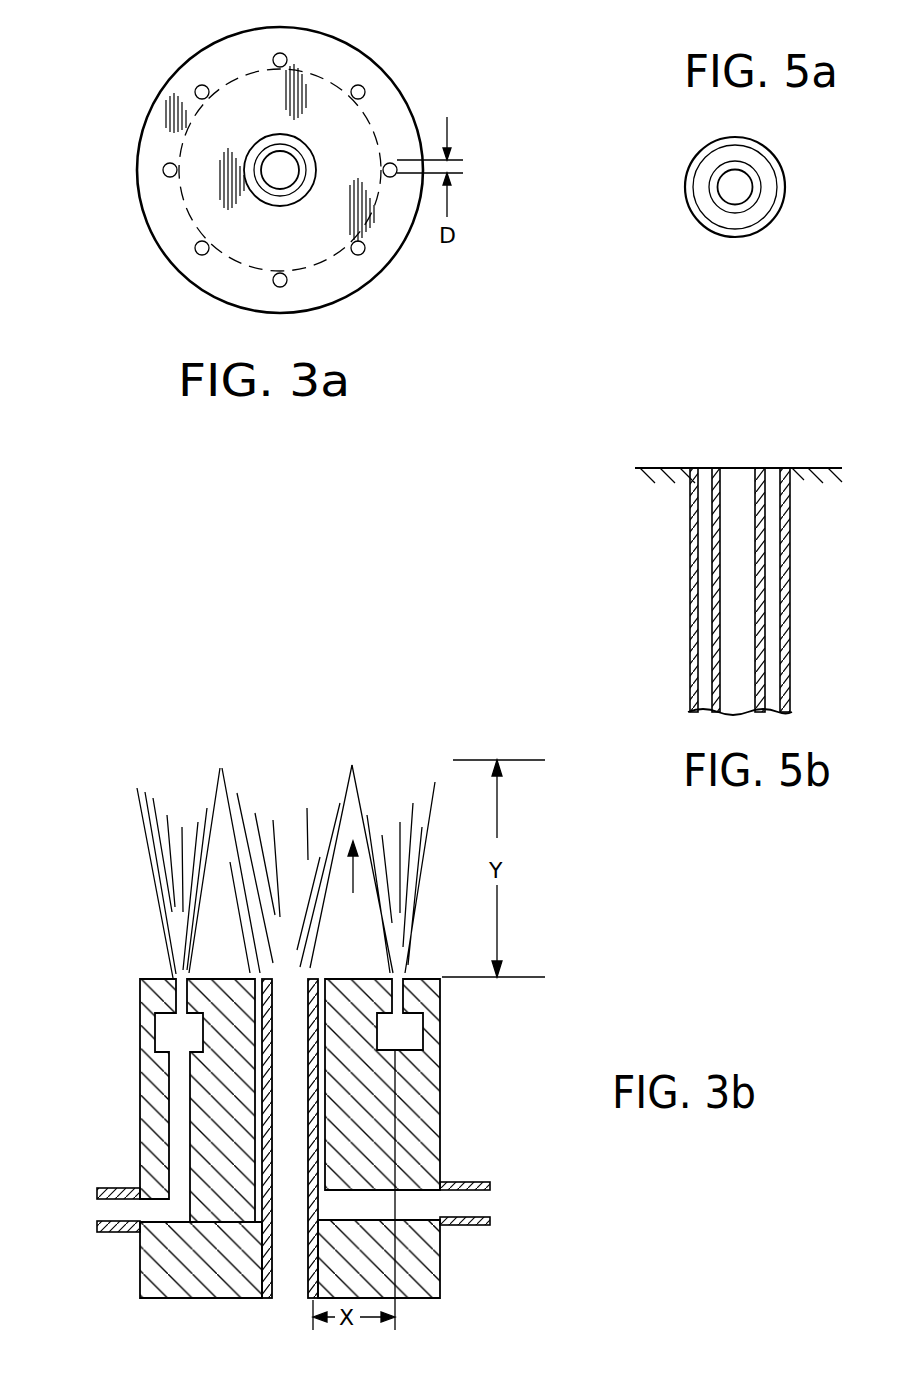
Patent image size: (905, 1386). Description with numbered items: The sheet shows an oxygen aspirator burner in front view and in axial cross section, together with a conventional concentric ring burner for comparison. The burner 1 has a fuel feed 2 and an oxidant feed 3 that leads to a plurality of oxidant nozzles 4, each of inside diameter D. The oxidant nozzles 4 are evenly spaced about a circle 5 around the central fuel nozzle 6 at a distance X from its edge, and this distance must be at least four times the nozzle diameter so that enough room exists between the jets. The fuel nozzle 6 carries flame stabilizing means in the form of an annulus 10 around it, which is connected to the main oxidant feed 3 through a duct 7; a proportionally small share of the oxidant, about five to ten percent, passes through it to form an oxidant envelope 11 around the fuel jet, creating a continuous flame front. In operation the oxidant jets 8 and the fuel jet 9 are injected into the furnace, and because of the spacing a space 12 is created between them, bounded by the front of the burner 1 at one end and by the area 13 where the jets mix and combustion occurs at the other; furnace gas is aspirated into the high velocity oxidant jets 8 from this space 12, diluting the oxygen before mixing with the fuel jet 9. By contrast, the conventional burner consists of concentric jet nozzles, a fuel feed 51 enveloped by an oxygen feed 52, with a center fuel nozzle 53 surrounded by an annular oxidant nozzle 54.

In FIG. 3A, the burner 1 is at (167, 266).
In FIG. 3B, the burner 1 is at (134, 970).
In FIG. 3B, the fuel feed 2 is at (292, 1310).
In FIG. 3B, the oxidant feed 3 is at (55, 1209).
In FIG. 3B, the oxidant nozzles 4 is at (405, 977).
In FIG. 3A, the circle 5 is at (370, 118).
In FIG. 3A, the fuel nozzle 6 is at (293, 155).
In FIG. 3B, the fuel nozzle 6 is at (310, 978).
In FIG. 3B, the duct 7 is at (540, 1200).
In FIG. 3B, the oxidant jets 8 is at (405, 818).
In FIG. 3B, the fuel jet 9 is at (299, 859).
In FIG. 3A, the annulus 10 is at (253, 155).
In FIG. 3B, the oxidant envelope 11 is at (243, 917).
In FIG. 3B, the space 12 is at (354, 878).
In FIG. 3B, the area 13 is at (290, 745).
In FIG. 5B, the fuel feed 51 is at (740, 700).
In FIG. 5B, the oxygen feed 52 is at (775, 703).
In FIG. 5A, the center fuel nozzle 53 is at (755, 188).
In FIG. 5B, the center fuel nozzle 53 is at (758, 467).
In FIG. 5A, the annular oxidant nozzle 54 is at (763, 148).
In FIG. 5B, the annular oxidant nozzle 54 is at (783, 467).